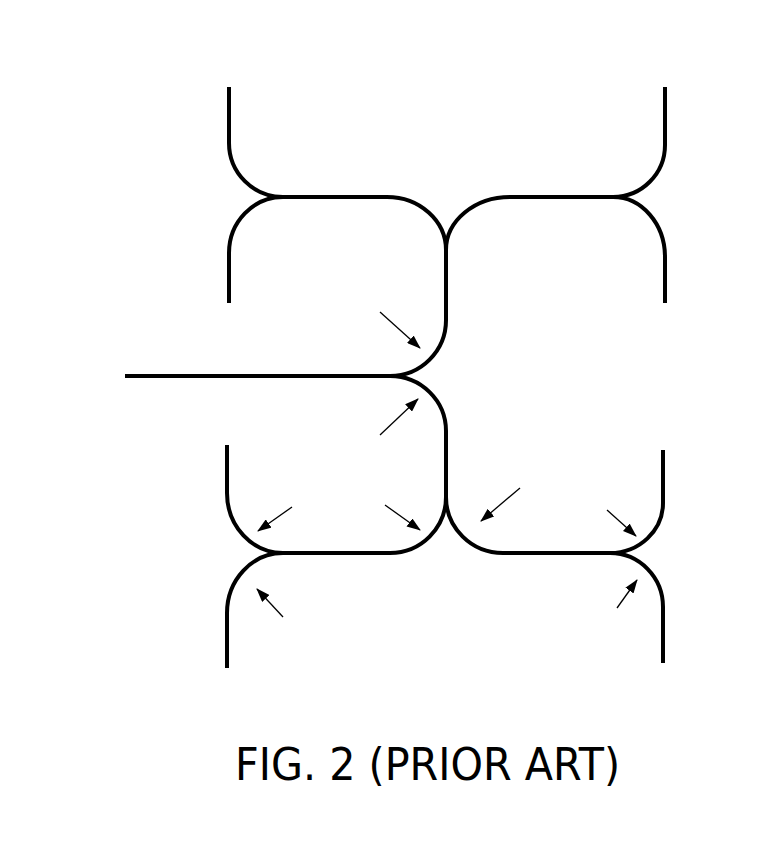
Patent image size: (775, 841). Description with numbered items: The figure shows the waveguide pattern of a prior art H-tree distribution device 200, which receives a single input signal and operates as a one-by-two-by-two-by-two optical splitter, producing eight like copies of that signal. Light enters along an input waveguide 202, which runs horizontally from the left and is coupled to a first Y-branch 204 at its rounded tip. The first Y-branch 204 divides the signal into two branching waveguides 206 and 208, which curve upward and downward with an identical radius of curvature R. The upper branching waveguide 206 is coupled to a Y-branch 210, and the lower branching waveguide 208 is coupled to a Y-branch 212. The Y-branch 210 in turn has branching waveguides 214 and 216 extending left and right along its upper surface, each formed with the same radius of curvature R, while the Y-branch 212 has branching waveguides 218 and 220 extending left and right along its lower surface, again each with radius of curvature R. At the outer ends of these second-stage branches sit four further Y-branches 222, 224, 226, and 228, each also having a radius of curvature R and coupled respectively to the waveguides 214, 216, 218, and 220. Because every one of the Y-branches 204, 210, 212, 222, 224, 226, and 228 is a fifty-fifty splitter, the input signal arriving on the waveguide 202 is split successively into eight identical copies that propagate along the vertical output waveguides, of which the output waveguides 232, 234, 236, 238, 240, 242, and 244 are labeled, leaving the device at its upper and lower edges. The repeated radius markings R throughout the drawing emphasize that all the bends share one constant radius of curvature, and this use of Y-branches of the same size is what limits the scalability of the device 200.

The H-tree distribution device 200 is at (529, 79).
The input waveguide 202 is at (150, 378).
The first Y-branch 204 is at (433, 361).
The branching waveguide 206 is at (448, 290).
The branching waveguide 208 is at (448, 463).
The Y-branch 210 is at (446, 208).
The Y-branch 212 is at (447, 542).
The branching waveguide 214 is at (342, 194).
The branching waveguide 216 is at (565, 202).
The branching waveguide 218 is at (352, 560).
The branching waveguide 220 is at (536, 560).
The Y-branch 222 is at (243, 200).
The Y-branch 224 is at (641, 199).
The Y-branch 226 is at (243, 557).
The Y-branch 228 is at (651, 557).
The output waveguide 232 is at (230, 280).
The output waveguide 234 is at (667, 118).
The output waveguide 236 is at (230, 117).
The output waveguide 238 is at (226, 488).
The output waveguide 240 is at (228, 653).
The output waveguide 242 is at (667, 463).
The output waveguide 244 is at (667, 638).